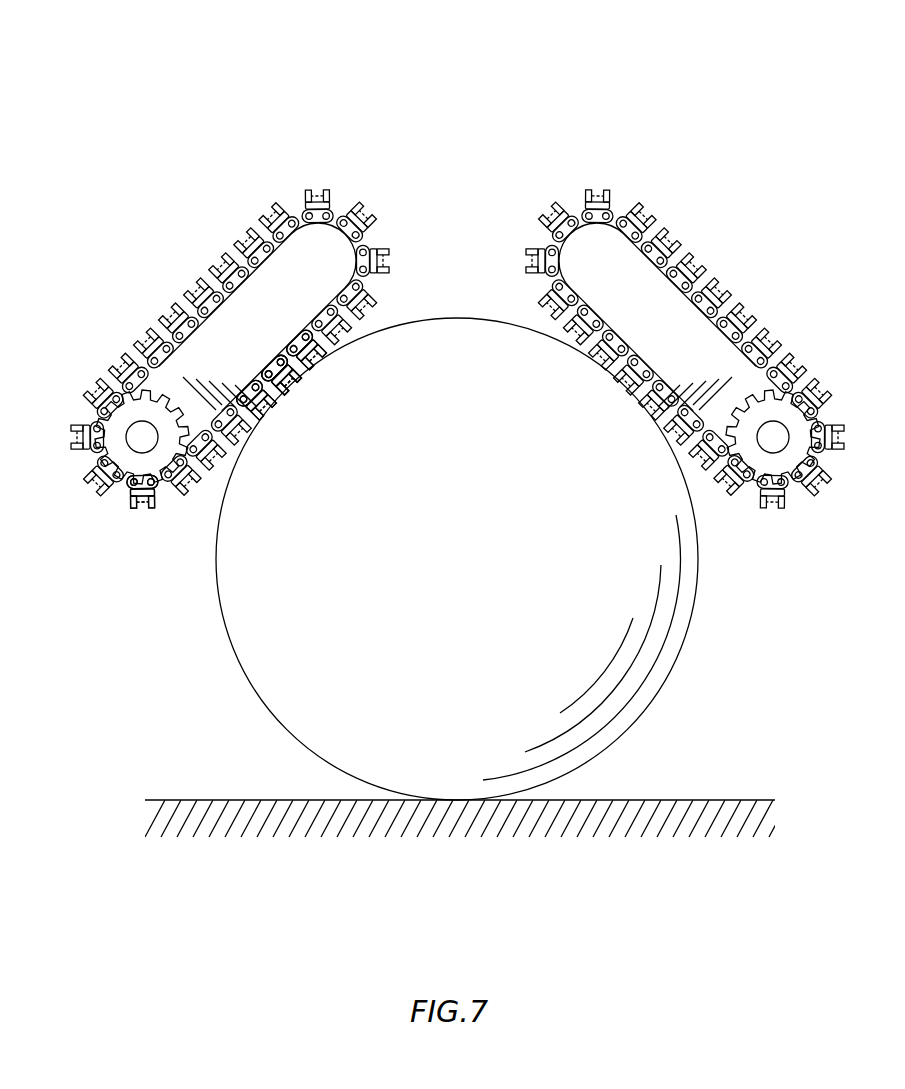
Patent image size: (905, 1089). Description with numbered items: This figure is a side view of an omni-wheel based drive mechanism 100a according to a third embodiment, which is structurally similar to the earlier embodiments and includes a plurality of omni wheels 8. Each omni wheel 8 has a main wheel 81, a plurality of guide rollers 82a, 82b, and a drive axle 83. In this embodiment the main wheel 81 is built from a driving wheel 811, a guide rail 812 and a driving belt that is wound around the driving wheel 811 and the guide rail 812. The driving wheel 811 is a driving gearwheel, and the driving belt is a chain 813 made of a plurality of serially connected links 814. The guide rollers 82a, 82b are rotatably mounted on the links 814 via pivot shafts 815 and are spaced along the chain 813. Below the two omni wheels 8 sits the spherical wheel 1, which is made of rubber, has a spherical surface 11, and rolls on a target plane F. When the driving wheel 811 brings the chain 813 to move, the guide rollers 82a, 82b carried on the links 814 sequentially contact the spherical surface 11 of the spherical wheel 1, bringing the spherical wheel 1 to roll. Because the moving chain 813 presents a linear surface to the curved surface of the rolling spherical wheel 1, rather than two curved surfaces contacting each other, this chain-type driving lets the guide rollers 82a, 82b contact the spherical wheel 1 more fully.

The omni-wheel based drive mechanism 100a is at (718, 76).
The omni wheel 8 is at (405, 205).
The main wheel 81 is at (128, 404).
The driving wheel 811 is at (152, 468).
The guide rail 812 is at (298, 265).
The chain 813 is at (268, 357).
The link 814 is at (298, 376).
The guide roller 82a is at (283, 384).
The guide roller 82b is at (290, 372).
The pivot shaft 815 is at (290, 390).
The drive axle 83 is at (137, 445).
The spherical wheel 1 is at (481, 332).
The spherical surface 11 is at (430, 318).
The target plane F is at (723, 805).